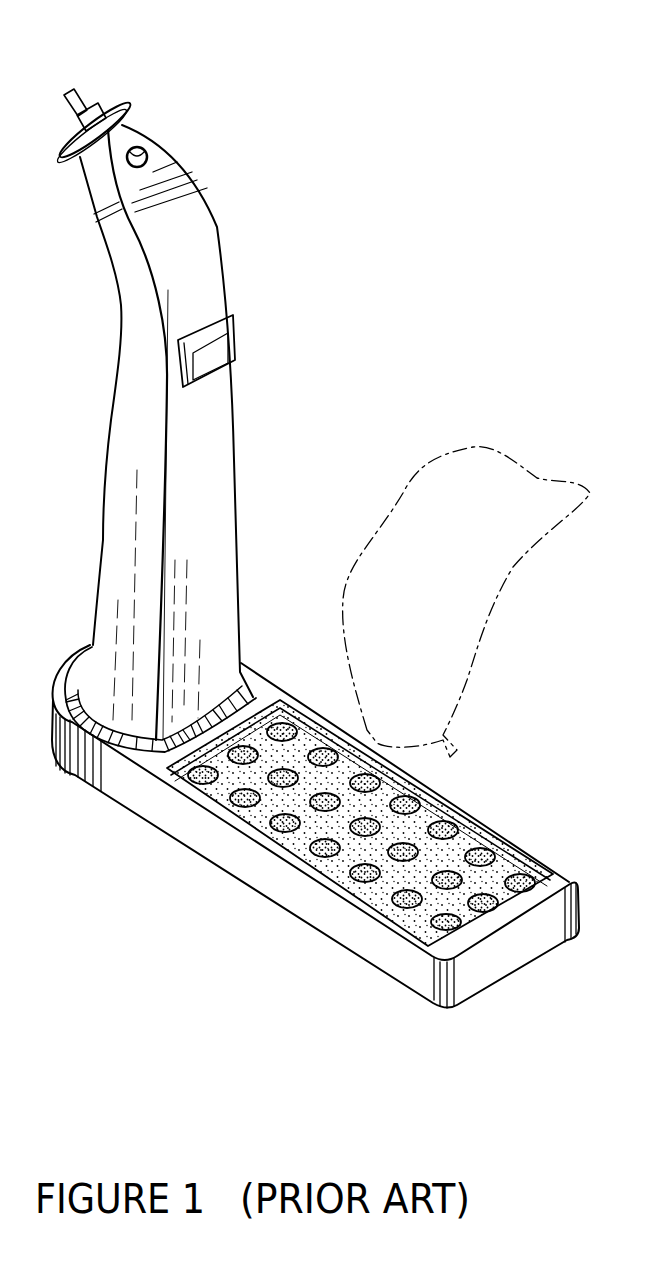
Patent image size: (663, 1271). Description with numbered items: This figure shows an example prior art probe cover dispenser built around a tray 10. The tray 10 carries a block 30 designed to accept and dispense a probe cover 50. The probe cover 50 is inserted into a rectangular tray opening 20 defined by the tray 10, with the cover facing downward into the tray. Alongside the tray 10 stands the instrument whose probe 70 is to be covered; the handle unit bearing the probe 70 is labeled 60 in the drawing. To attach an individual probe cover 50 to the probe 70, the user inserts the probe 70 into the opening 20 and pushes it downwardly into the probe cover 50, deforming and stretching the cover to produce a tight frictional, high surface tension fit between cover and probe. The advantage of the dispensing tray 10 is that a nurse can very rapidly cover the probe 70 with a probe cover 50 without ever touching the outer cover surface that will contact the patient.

The tray 10 is at (513, 953).
The tray opening 20 is at (548, 877).
The block 30 is at (493, 843).
The probe cover 50 is at (425, 808).
The thermometer handle unit 60 is at (237, 447).
The probe 70 is at (108, 135).